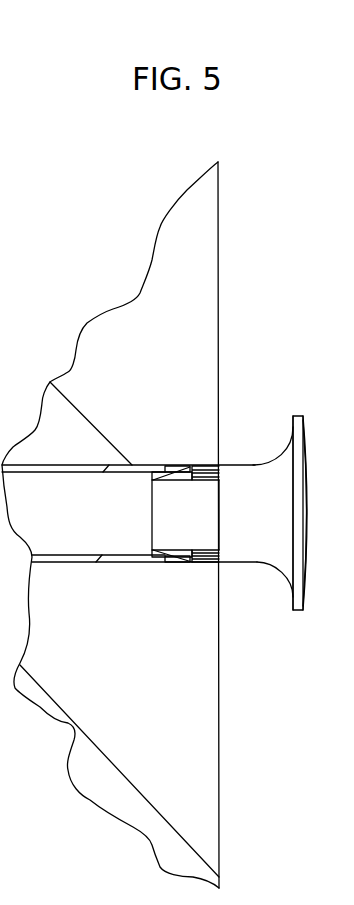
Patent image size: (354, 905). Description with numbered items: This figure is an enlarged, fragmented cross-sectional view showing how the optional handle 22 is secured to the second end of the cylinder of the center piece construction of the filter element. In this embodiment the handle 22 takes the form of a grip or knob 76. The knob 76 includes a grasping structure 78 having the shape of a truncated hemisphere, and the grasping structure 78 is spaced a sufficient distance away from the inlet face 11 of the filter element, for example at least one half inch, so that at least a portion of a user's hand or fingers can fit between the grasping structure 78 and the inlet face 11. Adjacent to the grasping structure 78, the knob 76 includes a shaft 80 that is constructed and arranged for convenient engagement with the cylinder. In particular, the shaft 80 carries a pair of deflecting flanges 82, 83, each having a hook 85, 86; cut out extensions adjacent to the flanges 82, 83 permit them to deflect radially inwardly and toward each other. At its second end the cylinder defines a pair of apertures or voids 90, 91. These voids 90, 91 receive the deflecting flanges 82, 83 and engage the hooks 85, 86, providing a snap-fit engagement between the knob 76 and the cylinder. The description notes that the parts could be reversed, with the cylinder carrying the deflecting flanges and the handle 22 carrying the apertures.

The inlet face 11 is at (220, 776).
The handle 22 is at (285, 400).
The knob 76 is at (307, 607).
The grasping structure 78 is at (306, 450).
The shaft 80 is at (238, 563).
The deflecting flange 82 is at (155, 480).
The deflecting flange 83 is at (155, 550).
The hook 85 is at (175, 470).
The hook 86 is at (170, 558).
The aperture or void 90 is at (192, 468).
The aperture or void 91 is at (188, 563).